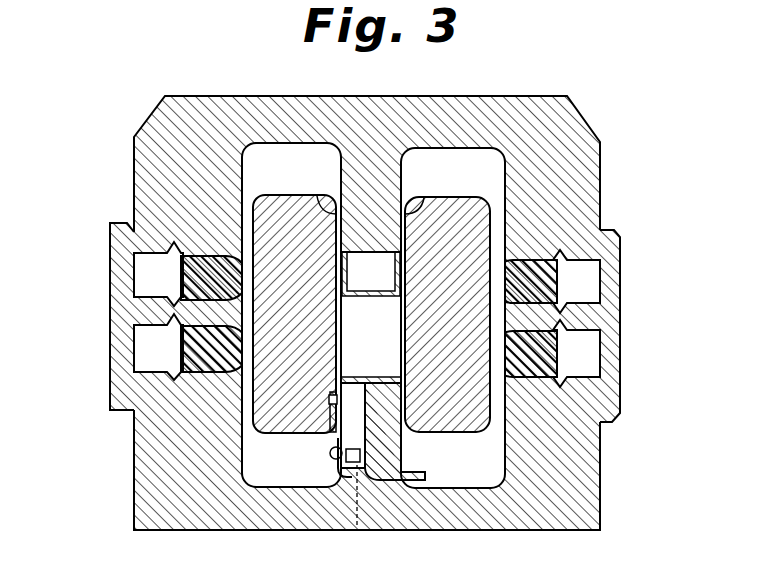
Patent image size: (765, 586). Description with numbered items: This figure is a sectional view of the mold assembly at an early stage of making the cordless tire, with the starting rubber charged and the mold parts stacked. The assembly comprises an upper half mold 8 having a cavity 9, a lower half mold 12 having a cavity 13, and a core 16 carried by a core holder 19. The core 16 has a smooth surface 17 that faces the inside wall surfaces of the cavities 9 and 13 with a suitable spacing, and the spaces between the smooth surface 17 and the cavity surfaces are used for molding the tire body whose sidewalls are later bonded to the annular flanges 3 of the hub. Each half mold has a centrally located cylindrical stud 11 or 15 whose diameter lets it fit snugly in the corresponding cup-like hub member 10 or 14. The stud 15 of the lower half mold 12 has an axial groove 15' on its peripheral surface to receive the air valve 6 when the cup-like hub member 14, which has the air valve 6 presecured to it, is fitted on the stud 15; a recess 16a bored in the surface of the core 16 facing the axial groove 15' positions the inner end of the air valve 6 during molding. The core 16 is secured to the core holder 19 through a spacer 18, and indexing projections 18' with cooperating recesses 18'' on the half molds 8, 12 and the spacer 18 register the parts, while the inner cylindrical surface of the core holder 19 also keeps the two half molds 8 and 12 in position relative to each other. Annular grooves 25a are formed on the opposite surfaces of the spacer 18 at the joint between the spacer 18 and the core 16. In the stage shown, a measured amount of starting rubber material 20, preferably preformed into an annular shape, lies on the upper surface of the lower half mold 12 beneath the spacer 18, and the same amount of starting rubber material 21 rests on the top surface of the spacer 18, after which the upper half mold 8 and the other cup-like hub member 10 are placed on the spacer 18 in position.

The annular flanges 3 is at (422, 200).
The air valve 6 is at (352, 463).
The upper half mold 8 is at (160, 200).
The cavity 9 is at (284, 160).
The cup-like hub member 10 is at (353, 250).
The cylindrical stud 11 is at (402, 182).
The lower half mold 12 is at (146, 460).
The cavity 13 is at (265, 453).
The cup-like hub member 14 is at (465, 495).
The cylindrical stud 15 is at (383, 478).
The axial groove 15' is at (315, 481).
The core 16 is at (503, 430).
The recess 16a is at (337, 443).
The smooth surface 17 is at (527, 487).
The spacer 18 is at (113, 316).
The indexing projections 18' is at (117, 358).
The recesses 18'' is at (117, 276).
The core holder 19 is at (620, 365).
The starting rubber material 20 is at (597, 342).
The starting rubber material 21 is at (600, 262).
The annular grooves 25a is at (537, 257).